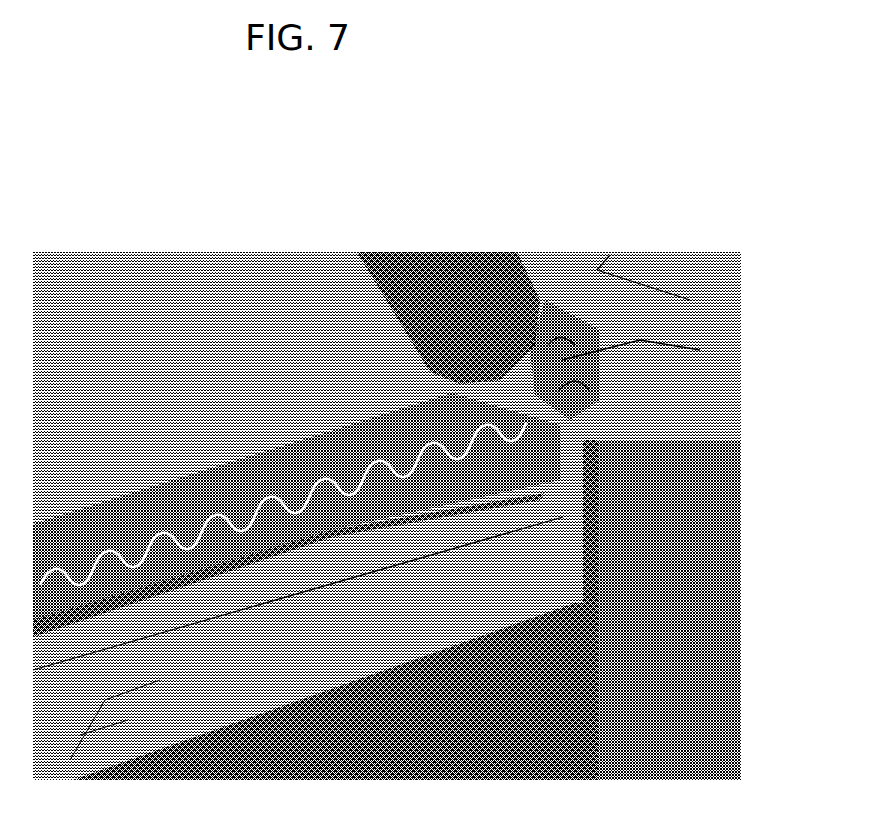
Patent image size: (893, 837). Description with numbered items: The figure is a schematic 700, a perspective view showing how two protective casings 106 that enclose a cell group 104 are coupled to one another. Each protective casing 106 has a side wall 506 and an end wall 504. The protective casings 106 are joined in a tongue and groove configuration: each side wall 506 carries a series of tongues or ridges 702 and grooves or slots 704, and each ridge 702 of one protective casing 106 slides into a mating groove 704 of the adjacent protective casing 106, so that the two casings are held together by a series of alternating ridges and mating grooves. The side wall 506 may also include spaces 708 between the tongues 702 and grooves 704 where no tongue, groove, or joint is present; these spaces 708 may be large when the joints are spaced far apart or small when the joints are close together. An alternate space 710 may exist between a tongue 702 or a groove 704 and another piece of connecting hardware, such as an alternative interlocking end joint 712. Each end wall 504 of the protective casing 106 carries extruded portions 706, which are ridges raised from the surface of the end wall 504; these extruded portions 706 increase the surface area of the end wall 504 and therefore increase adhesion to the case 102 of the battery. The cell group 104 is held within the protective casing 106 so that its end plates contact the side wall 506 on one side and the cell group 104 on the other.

The schematic 700 is at (650, 218).
The tongue or ridge 702 is at (290, 455).
The groove or slot 704 is at (288, 468).
The extruded portion 706 is at (705, 408).
The space 708 is at (222, 445).
The alternate space 710 is at (478, 368).
The alternative interlocking end joint 712 is at (535, 385).
The case 102 is at (655, 672).
The cell group 104 is at (600, 590).
The protective casing 106 is at (562, 360).
The end wall 504 is at (600, 272).
The side wall 506 is at (590, 540).